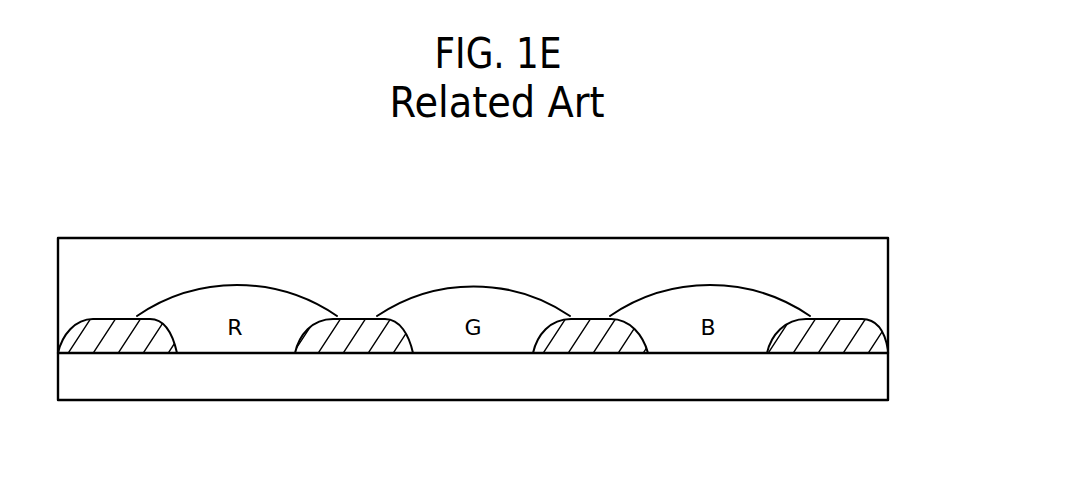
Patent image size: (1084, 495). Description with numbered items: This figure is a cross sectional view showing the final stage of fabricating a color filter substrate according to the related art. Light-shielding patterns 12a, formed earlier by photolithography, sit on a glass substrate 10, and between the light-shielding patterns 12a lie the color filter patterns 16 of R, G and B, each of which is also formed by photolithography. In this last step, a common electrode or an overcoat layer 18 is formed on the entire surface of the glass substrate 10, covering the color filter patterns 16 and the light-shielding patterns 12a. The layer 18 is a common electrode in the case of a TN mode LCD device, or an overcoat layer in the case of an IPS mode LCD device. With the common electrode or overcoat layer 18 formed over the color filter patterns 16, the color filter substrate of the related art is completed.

The glass substrate 10 is at (880, 378).
The light-shielding patterns 12a is at (116, 340).
The color filter patterns 16 is at (207, 340).
The common electrode or overcoat layer 18 is at (880, 285).